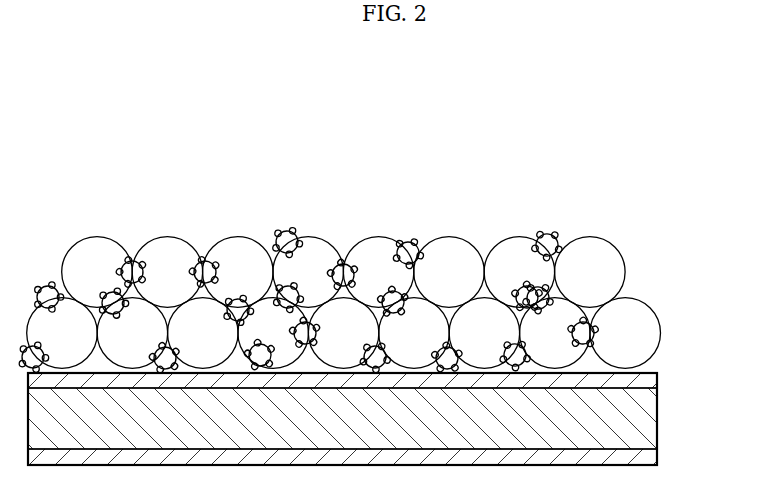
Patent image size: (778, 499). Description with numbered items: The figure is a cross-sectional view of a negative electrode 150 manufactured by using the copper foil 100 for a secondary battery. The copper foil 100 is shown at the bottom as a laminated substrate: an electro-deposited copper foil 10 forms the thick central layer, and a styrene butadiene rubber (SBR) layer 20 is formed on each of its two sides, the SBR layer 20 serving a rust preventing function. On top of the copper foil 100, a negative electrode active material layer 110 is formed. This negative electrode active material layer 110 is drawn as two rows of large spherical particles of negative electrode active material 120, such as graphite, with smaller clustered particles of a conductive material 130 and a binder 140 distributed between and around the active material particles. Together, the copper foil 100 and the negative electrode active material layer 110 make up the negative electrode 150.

The negative electrode 150 is at (194, 141).
The negative electrode active material layer 110 is at (669, 281).
The negative electrode active material 120 is at (588, 236).
The conductive material 130 is at (410, 252).
The binder 140 is at (545, 235).
The copper foil 100 is at (707, 369).
The electro-deposited copper foil 10 is at (659, 421).
The styrene butadiene rubber (SBR) layer 20 is at (659, 382).